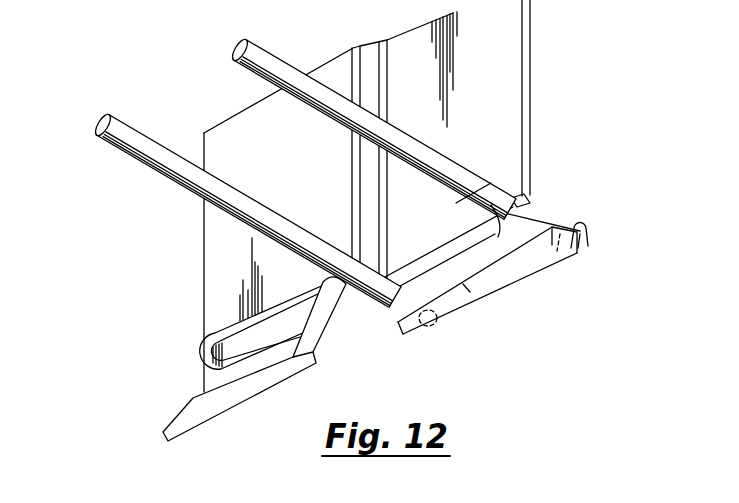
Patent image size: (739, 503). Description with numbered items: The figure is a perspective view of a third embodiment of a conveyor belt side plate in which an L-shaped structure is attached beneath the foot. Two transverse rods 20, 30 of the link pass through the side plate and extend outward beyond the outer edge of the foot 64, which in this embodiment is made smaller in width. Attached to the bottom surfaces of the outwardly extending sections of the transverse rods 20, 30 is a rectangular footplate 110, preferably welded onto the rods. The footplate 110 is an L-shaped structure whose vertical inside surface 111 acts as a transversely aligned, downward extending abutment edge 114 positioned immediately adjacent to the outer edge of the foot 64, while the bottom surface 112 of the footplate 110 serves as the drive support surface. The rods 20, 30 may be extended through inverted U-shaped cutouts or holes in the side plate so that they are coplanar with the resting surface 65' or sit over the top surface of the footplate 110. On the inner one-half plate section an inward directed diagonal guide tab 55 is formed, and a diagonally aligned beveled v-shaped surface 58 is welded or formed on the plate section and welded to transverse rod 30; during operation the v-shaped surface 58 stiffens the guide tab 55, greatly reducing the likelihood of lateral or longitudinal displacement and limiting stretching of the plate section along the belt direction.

The transverse rod 20 is at (234, 49).
The transverse rod 30 is at (96, 128).
The guide tab 55 is at (190, 401).
The beveled v-shaped surface 58 is at (318, 333).
The foot 64 is at (600, 231).
The resting surface 65' is at (401, 333).
The footplate 110 is at (566, 276).
The vertical inside surface 111 is at (480, 280).
The bottom surface 112 is at (518, 270).
The abutment edge 114 is at (460, 292).